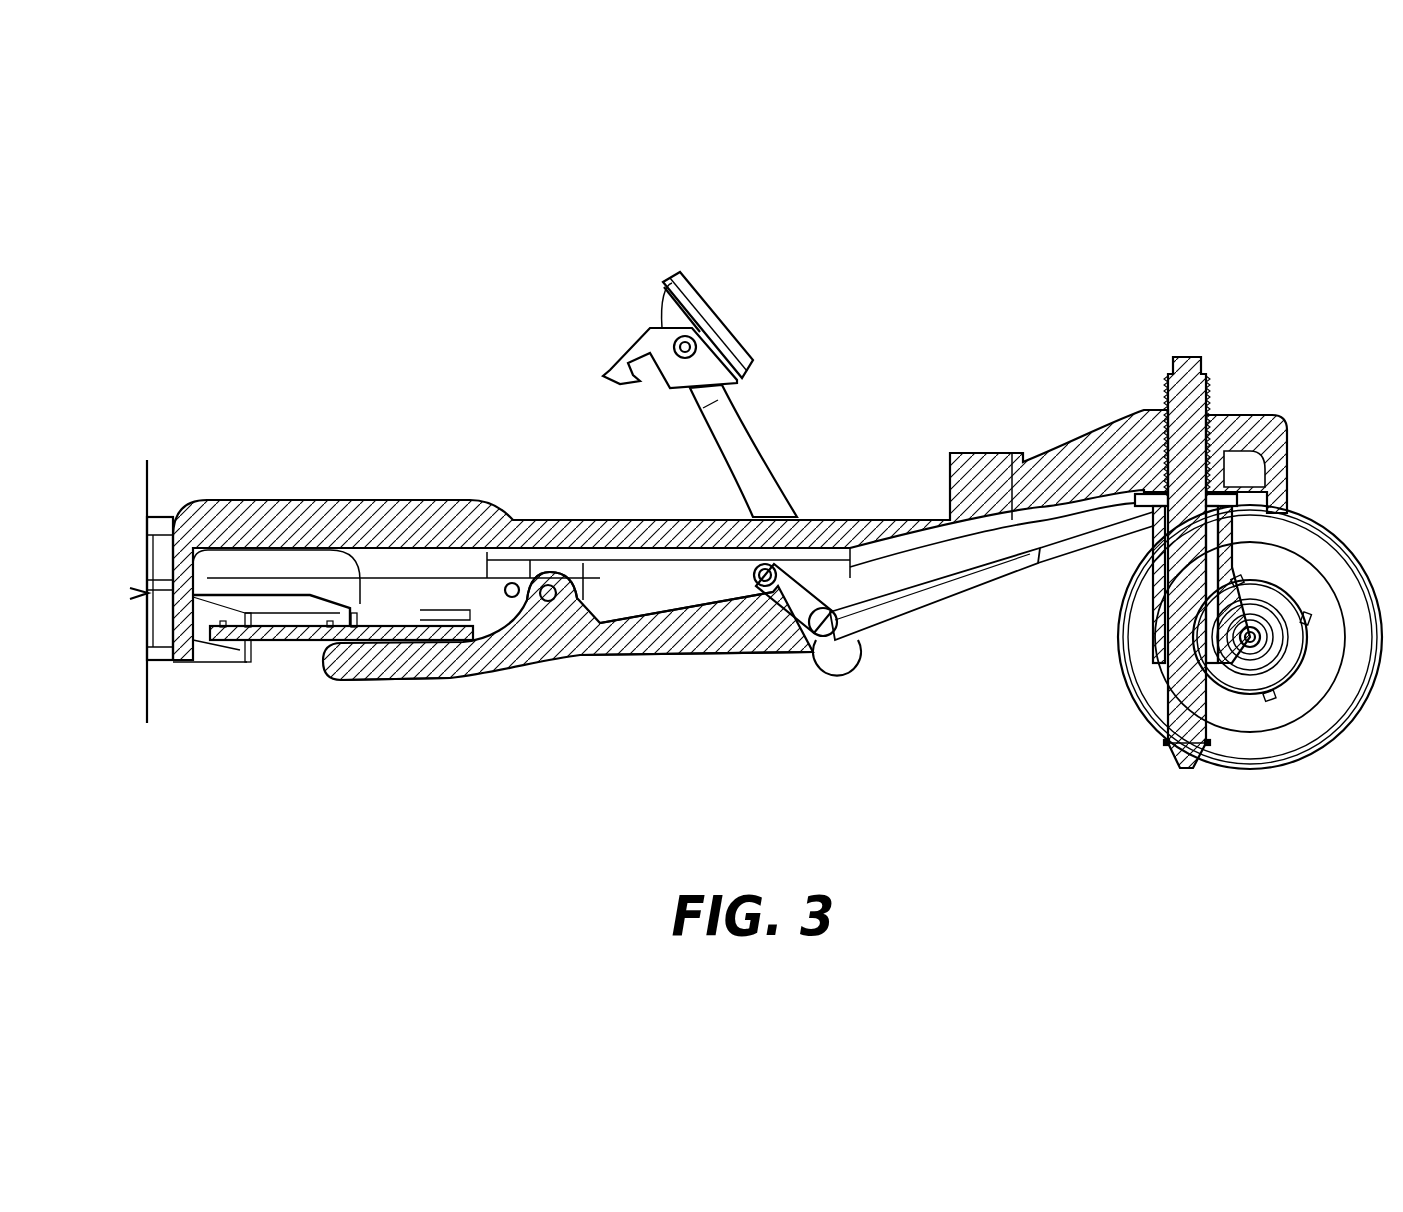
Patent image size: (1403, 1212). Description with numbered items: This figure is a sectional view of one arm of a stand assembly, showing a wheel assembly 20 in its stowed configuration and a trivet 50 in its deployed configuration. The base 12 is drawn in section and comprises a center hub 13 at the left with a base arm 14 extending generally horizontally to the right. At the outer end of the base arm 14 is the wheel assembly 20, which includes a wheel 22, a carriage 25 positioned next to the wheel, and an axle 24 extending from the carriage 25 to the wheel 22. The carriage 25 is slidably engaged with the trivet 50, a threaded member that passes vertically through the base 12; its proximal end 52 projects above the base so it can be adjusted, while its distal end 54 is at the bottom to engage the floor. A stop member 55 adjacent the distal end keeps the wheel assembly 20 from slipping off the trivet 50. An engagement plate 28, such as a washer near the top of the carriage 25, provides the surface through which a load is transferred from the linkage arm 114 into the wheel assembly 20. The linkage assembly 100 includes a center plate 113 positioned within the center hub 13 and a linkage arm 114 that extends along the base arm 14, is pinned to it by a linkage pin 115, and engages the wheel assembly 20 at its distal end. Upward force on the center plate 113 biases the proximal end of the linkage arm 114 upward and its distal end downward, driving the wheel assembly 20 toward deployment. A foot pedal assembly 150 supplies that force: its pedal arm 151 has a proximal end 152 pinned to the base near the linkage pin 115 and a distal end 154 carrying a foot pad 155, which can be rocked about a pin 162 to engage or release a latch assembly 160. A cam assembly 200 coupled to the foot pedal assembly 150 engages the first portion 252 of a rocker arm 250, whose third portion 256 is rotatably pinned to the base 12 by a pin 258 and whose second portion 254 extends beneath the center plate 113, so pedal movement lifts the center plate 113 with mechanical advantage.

The base 12 is at (210, 432).
The center hub 13 is at (345, 497).
The base arm 14 is at (1062, 435).
The wheel assembly 20 is at (1209, 679).
The wheel 22 is at (1137, 693).
The axle 24 is at (1252, 634).
The carriage 25 is at (1153, 582).
The engagement plate 28 is at (1142, 505).
The trivet 50 is at (1146, 560).
The proximal end of trivet 52 is at (1200, 357).
The distal end of trivet 54 is at (1183, 770).
The stop member 55 is at (1166, 743).
The linkage assembly 100 is at (556, 623).
The center plate 113 is at (300, 640).
The linkage arm 114 is at (700, 658).
The linkage pin 115 is at (835, 640).
The foot pedal assembly 150 is at (700, 353).
The pedal arm 151 is at (770, 462).
The proximal end of pedal arm 152 is at (830, 674).
The distal end of pedal arm 154 is at (655, 313).
The foot pad 155 is at (720, 307).
The latch assembly 160 is at (650, 345).
The pin 162 is at (702, 330).
The cam assembly 200 is at (775, 598).
The rocker arm 250 is at (440, 682).
The first portion of rocker arm 252 is at (647, 607).
The second portion of rocker arm 254 is at (410, 680).
The third portion of rocker arm 256 is at (555, 632).
The pin 258 is at (548, 586).